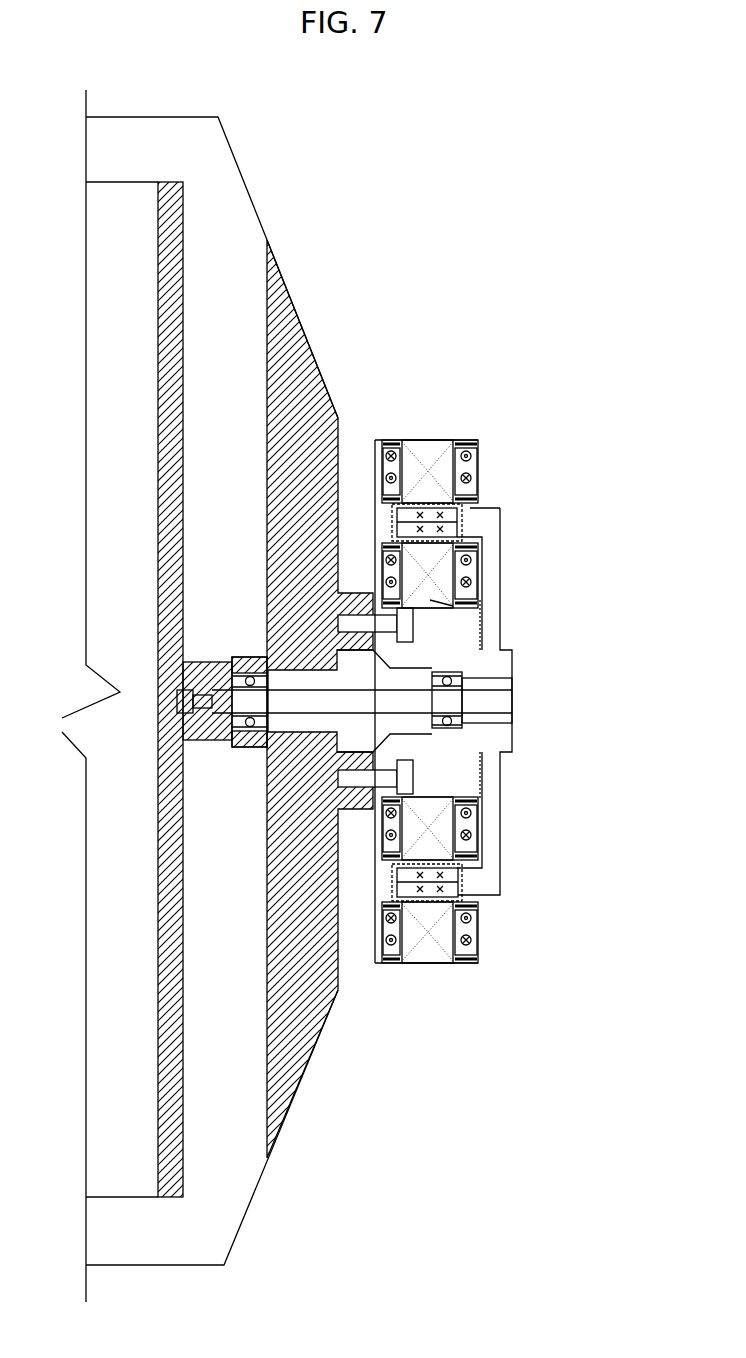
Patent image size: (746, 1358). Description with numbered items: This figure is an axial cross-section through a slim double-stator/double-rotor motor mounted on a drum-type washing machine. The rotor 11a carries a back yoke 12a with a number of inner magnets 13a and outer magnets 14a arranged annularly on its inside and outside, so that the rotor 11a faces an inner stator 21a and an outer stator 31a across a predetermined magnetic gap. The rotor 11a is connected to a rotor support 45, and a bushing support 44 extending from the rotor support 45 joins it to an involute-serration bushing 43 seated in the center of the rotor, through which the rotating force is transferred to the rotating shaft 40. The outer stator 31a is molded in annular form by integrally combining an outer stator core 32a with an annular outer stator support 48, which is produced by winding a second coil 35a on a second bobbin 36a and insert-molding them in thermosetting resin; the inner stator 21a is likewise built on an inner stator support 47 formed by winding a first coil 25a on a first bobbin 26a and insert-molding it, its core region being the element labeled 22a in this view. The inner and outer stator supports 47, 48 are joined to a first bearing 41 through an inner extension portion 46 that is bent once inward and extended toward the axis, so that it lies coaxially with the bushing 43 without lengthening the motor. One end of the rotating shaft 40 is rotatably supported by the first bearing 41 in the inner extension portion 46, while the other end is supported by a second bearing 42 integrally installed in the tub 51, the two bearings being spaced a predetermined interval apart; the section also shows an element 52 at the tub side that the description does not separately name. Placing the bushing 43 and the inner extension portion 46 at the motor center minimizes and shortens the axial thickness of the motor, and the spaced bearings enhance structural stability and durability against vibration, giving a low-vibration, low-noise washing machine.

The rotor 11a is at (505, 909).
The back yoke 12a is at (462, 886).
The inner magnets 13a is at (462, 878).
The outer magnets 14a is at (462, 894).
The inner stator 21a is at (501, 577).
The rotor of second motor unit 22a is at (462, 607).
The first coil 25a is at (478, 575).
The first bobbin 26a is at (478, 548).
The outer stator 31a is at (501, 487).
The outer stator core 32a is at (462, 503).
The second coil 35a is at (480, 470).
The second bobbin 36a is at (480, 445).
The rotating shaft 40 is at (512, 700).
The first bearing 41 is at (487, 797).
The second bearing 42 is at (265, 718).
The bushing 43 is at (500, 728).
The bushing support 44 is at (490, 663).
The rotor support 45 is at (500, 773).
The inner extension portion 46 is at (487, 797).
The inner stator support 47 is at (375, 835).
The outer stator support 48 is at (375, 930).
The tub 51 is at (302, 1085).
The drum 52 is at (182, 1130).